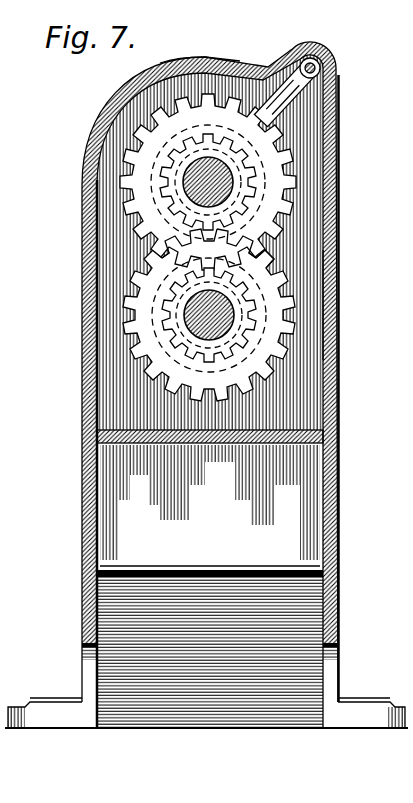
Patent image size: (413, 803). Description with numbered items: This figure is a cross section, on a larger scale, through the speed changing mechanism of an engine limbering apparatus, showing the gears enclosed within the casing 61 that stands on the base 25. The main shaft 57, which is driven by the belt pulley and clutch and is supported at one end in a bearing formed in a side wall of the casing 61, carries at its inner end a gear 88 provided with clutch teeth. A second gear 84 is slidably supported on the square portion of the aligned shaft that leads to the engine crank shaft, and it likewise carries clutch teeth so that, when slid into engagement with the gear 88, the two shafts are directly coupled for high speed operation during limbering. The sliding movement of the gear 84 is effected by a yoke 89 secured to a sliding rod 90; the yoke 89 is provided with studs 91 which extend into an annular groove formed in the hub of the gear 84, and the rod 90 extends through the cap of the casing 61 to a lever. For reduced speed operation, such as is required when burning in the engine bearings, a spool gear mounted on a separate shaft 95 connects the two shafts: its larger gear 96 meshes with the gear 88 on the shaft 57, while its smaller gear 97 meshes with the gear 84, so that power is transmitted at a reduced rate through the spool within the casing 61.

The base 25 is at (84, 572).
The shaft 57 is at (222, 180).
The casing 61 is at (100, 122).
The gear 84 is at (282, 210).
The gear 88 is at (150, 204).
The yoke 89 is at (274, 126).
The sliding rod 90 is at (320, 62).
The studs 91 is at (205, 58).
The shaft 95 is at (190, 336).
The larger gear 96 is at (120, 322).
The smaller gear 97 is at (318, 302).